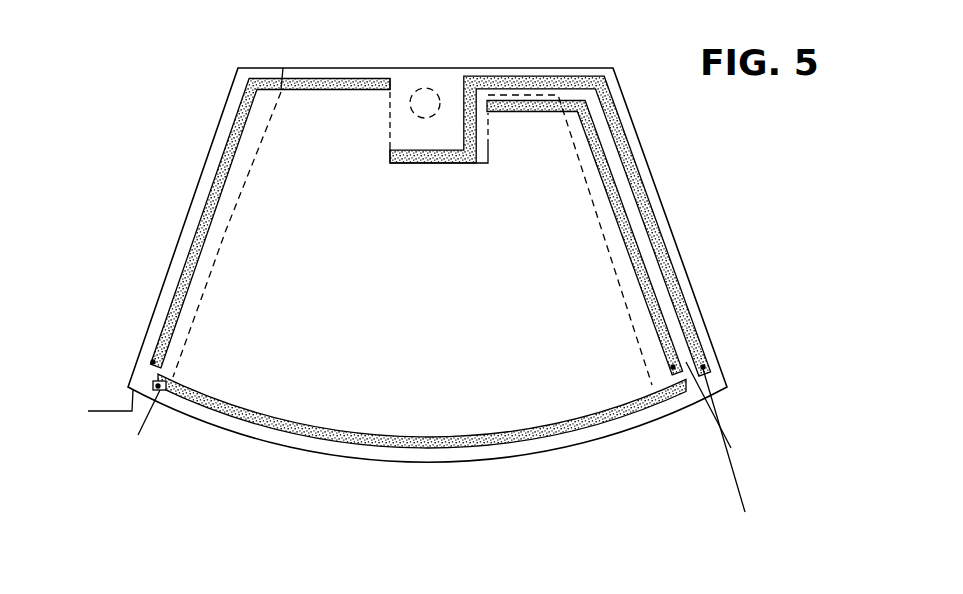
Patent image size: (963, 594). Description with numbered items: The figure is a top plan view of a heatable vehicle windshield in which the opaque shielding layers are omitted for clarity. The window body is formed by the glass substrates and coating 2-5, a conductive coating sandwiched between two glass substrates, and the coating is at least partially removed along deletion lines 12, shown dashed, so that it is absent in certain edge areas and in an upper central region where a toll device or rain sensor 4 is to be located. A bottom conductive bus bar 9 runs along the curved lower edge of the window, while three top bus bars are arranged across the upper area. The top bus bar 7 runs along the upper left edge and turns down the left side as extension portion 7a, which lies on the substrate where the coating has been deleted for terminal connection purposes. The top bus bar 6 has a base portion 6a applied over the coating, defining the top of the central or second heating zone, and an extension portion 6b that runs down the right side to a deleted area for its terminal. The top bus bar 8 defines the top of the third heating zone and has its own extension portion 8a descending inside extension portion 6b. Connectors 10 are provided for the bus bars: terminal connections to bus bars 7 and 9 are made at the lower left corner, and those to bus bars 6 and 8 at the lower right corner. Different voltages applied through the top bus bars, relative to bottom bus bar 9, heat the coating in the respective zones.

The glass substrates and coating 2-5 is at (255, 270).
The toll device or rain sensor 4 is at (423, 100).
The top conductive bus bar 6 is at (431, 164).
The base portion of bus bar 6 6a is at (403, 165).
The extension portion of bus bar 6 6b is at (644, 185).
The top conductive bus bar 7 is at (347, 82).
The extension portion of bus bar 7 7a is at (219, 183).
The top conductive bus bar 8 is at (524, 113).
The extension portion of bus bar 8 8a is at (632, 256).
The bottom conductive bus bar 9 is at (416, 440).
The connector 10 is at (135, 496).
The deletion lines 12 is at (380, 131).